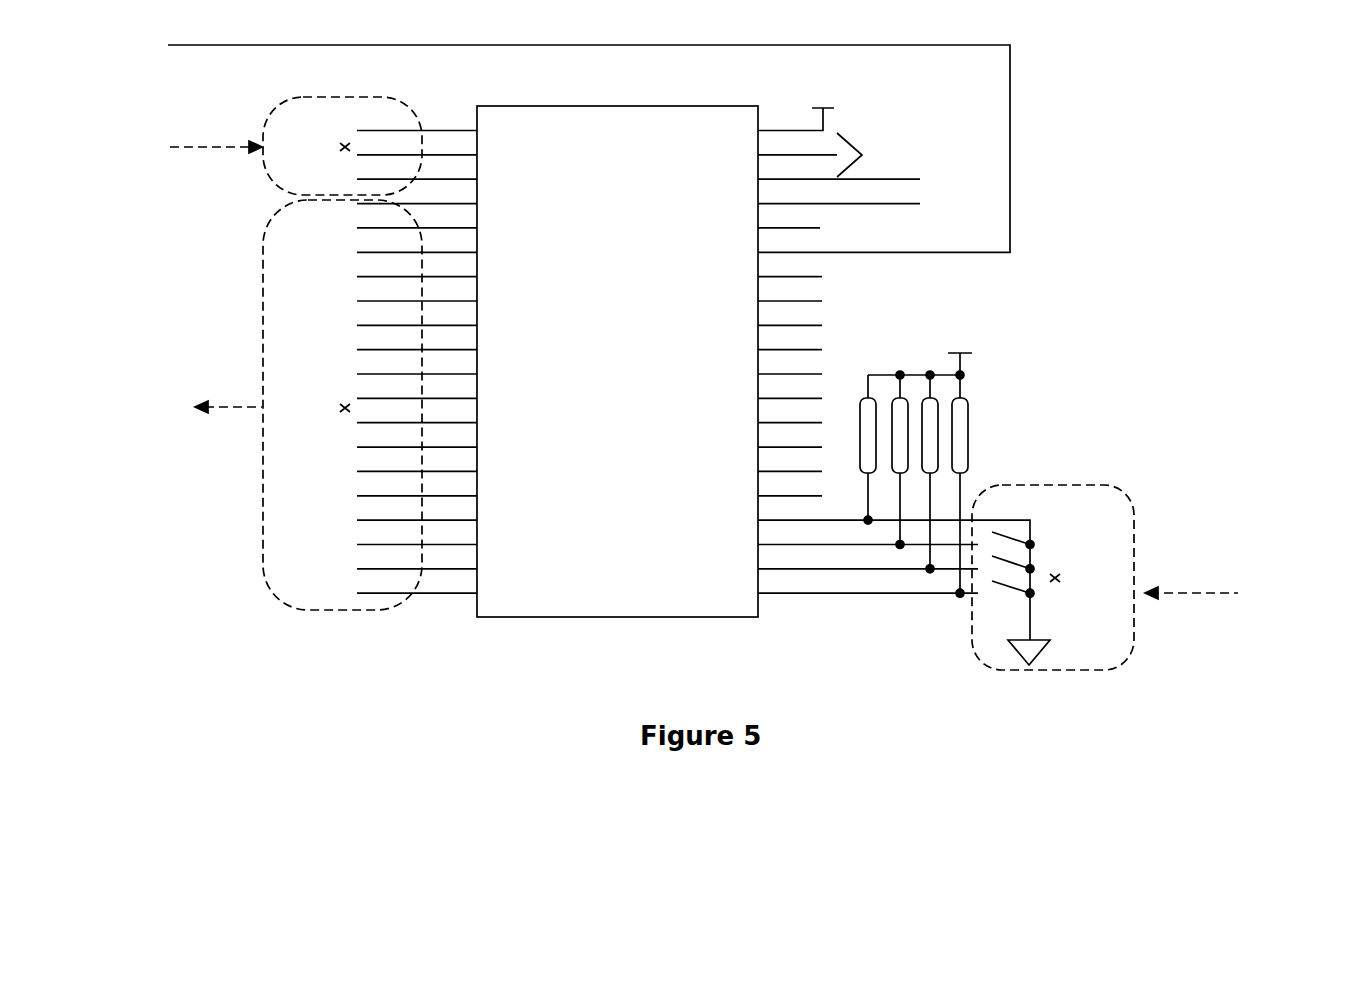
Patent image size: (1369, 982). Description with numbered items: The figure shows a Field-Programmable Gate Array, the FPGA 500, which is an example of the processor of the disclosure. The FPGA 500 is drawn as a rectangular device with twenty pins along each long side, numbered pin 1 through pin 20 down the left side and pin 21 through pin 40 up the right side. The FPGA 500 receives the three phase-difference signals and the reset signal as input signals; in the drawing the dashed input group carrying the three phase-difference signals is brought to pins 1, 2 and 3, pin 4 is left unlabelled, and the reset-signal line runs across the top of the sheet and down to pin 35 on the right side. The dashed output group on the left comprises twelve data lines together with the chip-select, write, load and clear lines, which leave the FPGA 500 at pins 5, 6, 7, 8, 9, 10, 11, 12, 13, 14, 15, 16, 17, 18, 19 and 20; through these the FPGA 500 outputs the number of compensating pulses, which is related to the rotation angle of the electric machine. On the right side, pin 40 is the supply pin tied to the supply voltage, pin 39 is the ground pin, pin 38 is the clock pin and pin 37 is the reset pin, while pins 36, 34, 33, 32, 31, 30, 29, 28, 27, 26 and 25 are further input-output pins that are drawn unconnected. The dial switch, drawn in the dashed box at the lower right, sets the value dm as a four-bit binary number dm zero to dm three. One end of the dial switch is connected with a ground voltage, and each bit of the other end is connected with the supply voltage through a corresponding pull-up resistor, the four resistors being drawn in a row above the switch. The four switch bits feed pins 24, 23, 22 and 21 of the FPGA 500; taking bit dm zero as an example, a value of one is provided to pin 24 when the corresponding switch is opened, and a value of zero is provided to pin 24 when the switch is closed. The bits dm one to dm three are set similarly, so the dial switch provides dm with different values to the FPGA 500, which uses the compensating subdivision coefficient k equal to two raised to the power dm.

The Field-Programmable Gate Array (FPGA) 500 is at (704, 359).
The FPGA pin 1 (IO1, Sbc) 1 is at (417, 121).
The FPGA pin 2 (IO2, Sca) 2 is at (417, 145).
The FPGA pin 3 (IO3, Sab) 3 is at (417, 170).
The FPGA pin 4 (IO4) 4 is at (417, 194).
The FPGA pin 5 (IO5, DB0) 5 is at (417, 219).
The FPGA pin 6 (IO6, DB1) 6 is at (417, 243).
The FPGA pin 7 (IO7, DB2) 7 is at (417, 267).
The FPGA pin 8 (IO8, DB3) 8 is at (417, 292).
The FPGA pin 9 (IO9, DB4) 9 is at (417, 316).
The FPGA pin 10 (IO10, DB5) 10 is at (417, 340).
The FPGA pin 11 (IO11, DB6) 11 is at (417, 365).
The FPGA pin 12 (IO12, DB7) 12 is at (417, 389).
The FPGA pin 13 (IO13, DB8) 13 is at (417, 413).
The FPGA pin 14 (IO14, DB9) 14 is at (417, 438).
The FPGA pin 15 (IO15, DB10) 15 is at (417, 462).
The FPGA pin 16 (IO16, DB11) 16 is at (417, 486).
The FPGA pin 17 (IO17, CS) 17 is at (417, 511).
The FPGA pin 18 (IO18, WR) 18 is at (417, 535).
The FPGA pin 19 (IO19, LDAC) 19 is at (417, 559).
The FPGA pin 20 (IO20, CLR) 20 is at (417, 584).
The FPGA pin 21 (IO21) 21 is at (868, 584).
The FPGA pin 22 (IO22) 22 is at (868, 559).
The FPGA pin 23 (IO23) 23 is at (868, 535).
The FPGA pin 24 (IO24) 24 is at (894, 569).
The FPGA pin 25 (IO25) 25 is at (790, 486).
The FPGA pin 26 (IO26) 26 is at (790, 462).
The FPGA pin 27 (IO27) 27 is at (790, 438).
The FPGA pin 28 (IO28) 28 is at (790, 413).
The FPGA pin 29 (IO29) 29 is at (790, 389).
The FPGA pin 30 (IO30) 30 is at (790, 365).
The FPGA pin 31 (IO31) 31 is at (790, 340).
The FPGA pin 32 (IO32) 32 is at (790, 316).
The FPGA pin 33 (IO33) 33 is at (790, 292).
The FPGA pin 34 (IO34) 34 is at (790, 267).
The FPGA pin 35 (IO35) 35 is at (589, 150).
The FPGA pin 36 (IO36) 36 is at (789, 219).
The FPGA pin 37 (RST) 37 is at (839, 194).
The FPGA pin 38 (CLK) 38 is at (839, 170).
The FPGA pin 39 (GND) 39 is at (810, 155).
The FPGA pin 40 (VCC) 40 is at (798, 106).